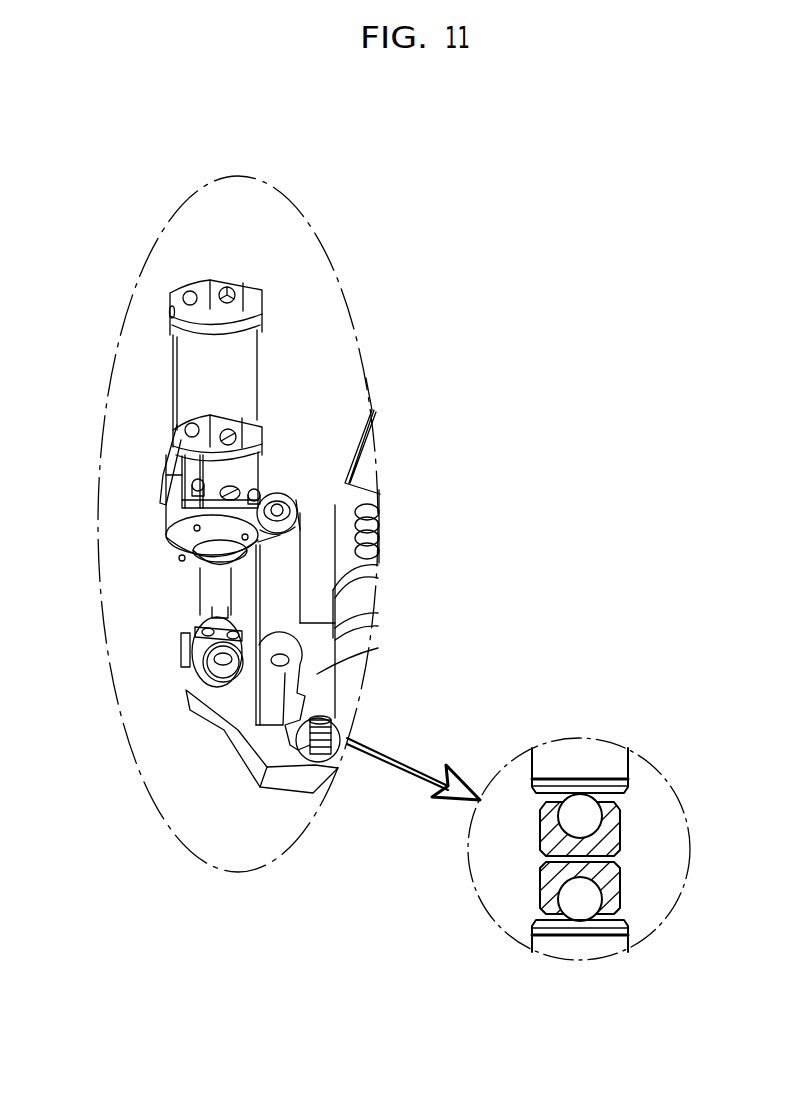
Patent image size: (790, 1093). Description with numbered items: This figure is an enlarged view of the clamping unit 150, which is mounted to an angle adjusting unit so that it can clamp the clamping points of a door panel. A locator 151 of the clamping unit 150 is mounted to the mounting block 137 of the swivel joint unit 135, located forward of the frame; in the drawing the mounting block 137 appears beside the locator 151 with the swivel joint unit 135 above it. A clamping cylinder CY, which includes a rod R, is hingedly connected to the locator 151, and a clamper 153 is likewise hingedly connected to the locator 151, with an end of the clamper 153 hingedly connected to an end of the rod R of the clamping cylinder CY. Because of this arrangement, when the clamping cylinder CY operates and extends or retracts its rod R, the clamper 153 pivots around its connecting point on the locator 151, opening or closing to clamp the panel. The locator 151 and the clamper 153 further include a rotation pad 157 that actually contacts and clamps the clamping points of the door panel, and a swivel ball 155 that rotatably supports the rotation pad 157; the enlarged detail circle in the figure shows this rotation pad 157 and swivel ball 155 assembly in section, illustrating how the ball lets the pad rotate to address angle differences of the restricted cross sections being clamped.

The clamping unit 150 is at (225, 422).
The clamping cylinder CY is at (217, 380).
The rod R is at (217, 588).
The swivel joint unit 135 is at (342, 563).
The mounting block 137 is at (362, 602).
The locator 151 is at (317, 674).
The clamper 153 is at (248, 732).
The swivel ball 155 is at (570, 818).
The rotation pad 157 is at (345, 745).